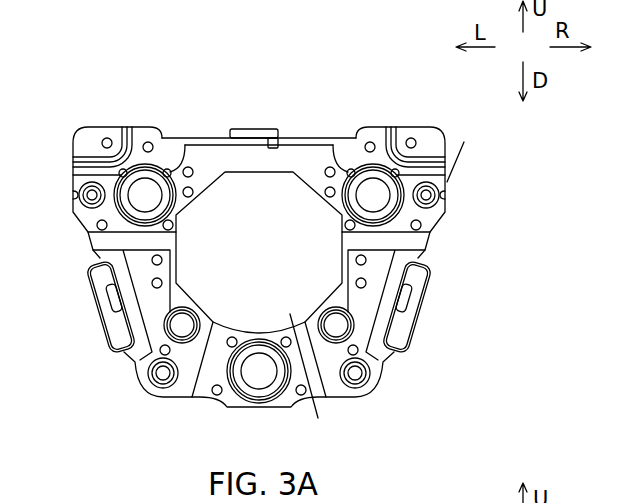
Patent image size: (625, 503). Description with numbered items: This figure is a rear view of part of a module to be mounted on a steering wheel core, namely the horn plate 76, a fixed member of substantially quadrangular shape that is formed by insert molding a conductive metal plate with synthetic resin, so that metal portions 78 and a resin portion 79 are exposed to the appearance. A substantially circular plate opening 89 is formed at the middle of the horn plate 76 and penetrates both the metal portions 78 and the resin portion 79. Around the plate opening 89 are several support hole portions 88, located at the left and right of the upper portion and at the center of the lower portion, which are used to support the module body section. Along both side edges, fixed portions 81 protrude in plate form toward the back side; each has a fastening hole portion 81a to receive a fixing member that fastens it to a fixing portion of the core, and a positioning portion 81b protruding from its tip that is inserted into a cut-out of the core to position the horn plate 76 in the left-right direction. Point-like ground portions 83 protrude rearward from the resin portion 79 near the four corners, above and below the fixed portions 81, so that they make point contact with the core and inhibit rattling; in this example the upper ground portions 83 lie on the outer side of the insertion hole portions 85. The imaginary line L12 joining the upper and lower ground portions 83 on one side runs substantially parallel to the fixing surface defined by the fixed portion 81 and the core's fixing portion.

The horn plate 76 is at (244, 112).
The metal portions 78 is at (143, 138).
The resin portion 79 is at (297, 142).
The fixed portions 81 is at (108, 308).
The fastening hole portion 81a is at (103, 303).
The positioning portion 81b is at (92, 272).
The ground portions 83 is at (76, 195).
The insertion hole portions 85 is at (92, 183).
The support hole portions 88 is at (160, 134).
The plate opening 89 is at (228, 314).
The imaginary line L12 is at (463, 156).